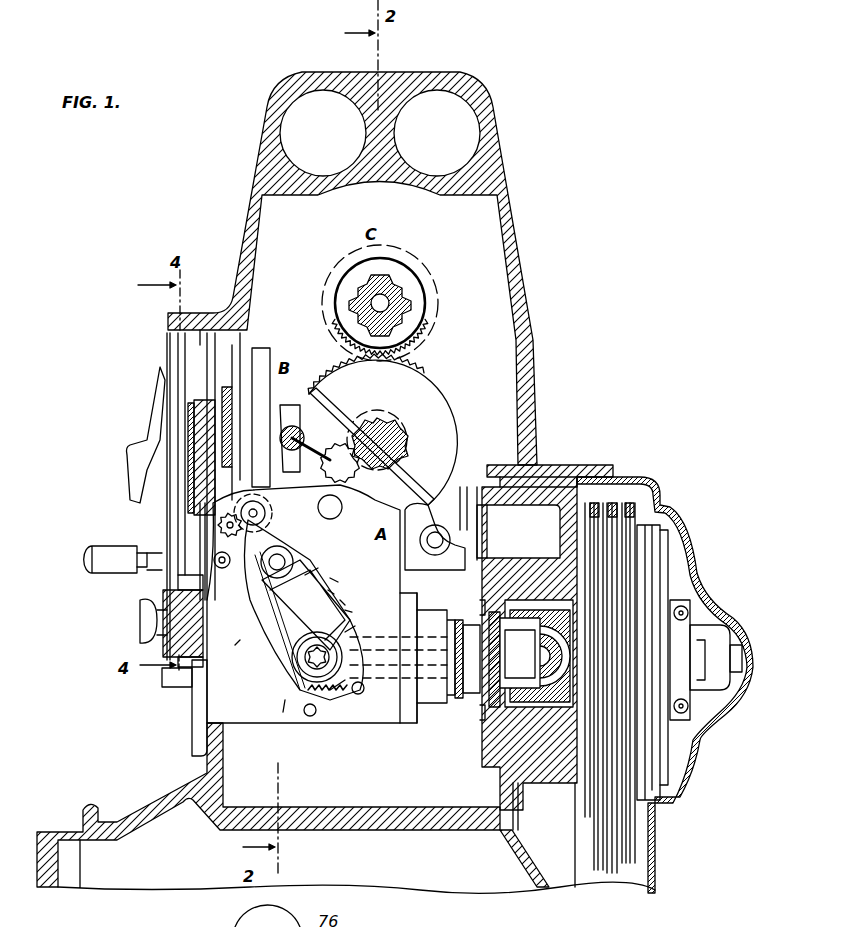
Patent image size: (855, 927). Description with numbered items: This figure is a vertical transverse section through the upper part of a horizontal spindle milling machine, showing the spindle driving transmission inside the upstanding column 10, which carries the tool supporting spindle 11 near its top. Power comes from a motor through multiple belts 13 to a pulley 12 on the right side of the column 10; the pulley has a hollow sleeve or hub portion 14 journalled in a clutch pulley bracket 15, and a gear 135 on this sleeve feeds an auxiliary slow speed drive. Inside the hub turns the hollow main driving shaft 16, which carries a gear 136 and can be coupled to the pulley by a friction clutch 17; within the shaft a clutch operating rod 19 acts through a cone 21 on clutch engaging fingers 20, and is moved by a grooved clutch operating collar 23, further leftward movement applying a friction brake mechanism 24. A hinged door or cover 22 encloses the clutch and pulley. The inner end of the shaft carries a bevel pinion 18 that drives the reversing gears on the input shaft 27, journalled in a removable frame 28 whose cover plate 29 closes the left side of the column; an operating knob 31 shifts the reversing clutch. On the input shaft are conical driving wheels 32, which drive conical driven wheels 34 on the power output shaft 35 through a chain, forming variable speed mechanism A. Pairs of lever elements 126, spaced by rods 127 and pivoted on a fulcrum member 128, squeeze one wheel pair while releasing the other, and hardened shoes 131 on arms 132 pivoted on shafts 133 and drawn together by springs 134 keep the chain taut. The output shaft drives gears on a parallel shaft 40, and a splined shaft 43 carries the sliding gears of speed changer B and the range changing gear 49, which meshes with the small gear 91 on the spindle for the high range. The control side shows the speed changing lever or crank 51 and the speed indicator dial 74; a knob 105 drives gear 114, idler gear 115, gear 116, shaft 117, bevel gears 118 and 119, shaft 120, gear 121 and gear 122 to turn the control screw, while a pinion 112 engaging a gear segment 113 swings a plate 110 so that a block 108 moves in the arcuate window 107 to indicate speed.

The column 10 is at (528, 265).
The tool supporting spindle 11 is at (400, 282).
The pulley 12 is at (655, 497).
The belts 13 is at (630, 503).
The hollow sleeve or hub portion 14 is at (535, 540).
The clutch pulley bracket 15 is at (540, 795).
The main driving shaft 16 is at (545, 780).
The friction clutch 17 is at (668, 740).
The bevel pinion 18 is at (352, 630).
The clutch operating rod 19 is at (522, 735).
The clutch engaging fingers 20 is at (695, 605).
The cone 21 is at (718, 628).
The door or cover 22 is at (748, 690).
The clutch operating collar 23 is at (445, 700).
The friction brake mechanism 24 is at (430, 705).
The shaft 27 is at (262, 665).
The removable frame 28 is at (250, 718).
The cover plate 29 is at (192, 728).
The operating knob 31 is at (162, 680).
The conical driving wheels 32 is at (332, 692).
The driven wheels 34 is at (312, 572).
The power output shaft 35 is at (284, 556).
The shaft 40 is at (328, 466).
The splined shaft 43 is at (372, 426).
The gear 49 is at (415, 385).
The speed changing lever or crank 51 is at (138, 497).
The speed indicator dial 74 is at (160, 380).
The small gear 91 is at (425, 348).
The knob 105 is at (145, 615).
The arcuate slot or window 107 is at (158, 608).
The block 108 is at (165, 592).
The plate 110 is at (100, 551).
The pinion 112 is at (165, 650).
The gear segment 113 is at (160, 635).
The gear 114 is at (215, 628).
The idler gear 115 is at (158, 577).
The gear 116 is at (175, 535).
The shaft 117 is at (170, 520).
The bevel gear 118 is at (245, 524).
The bevel gear 119 is at (230, 560).
The shaft 120 is at (240, 530).
The gear 121 is at (235, 486).
The gear 122 is at (262, 510).
The lever elements 126 is at (336, 580).
The rods 127 is at (335, 512).
The fulcrum member 128 is at (332, 592).
The hardened shoes 131 is at (240, 646).
The arms 132 is at (288, 703).
The shafts 133 is at (310, 718).
The springs 134 is at (340, 692).
The gear 135 is at (493, 610).
The gear 136 is at (458, 618).